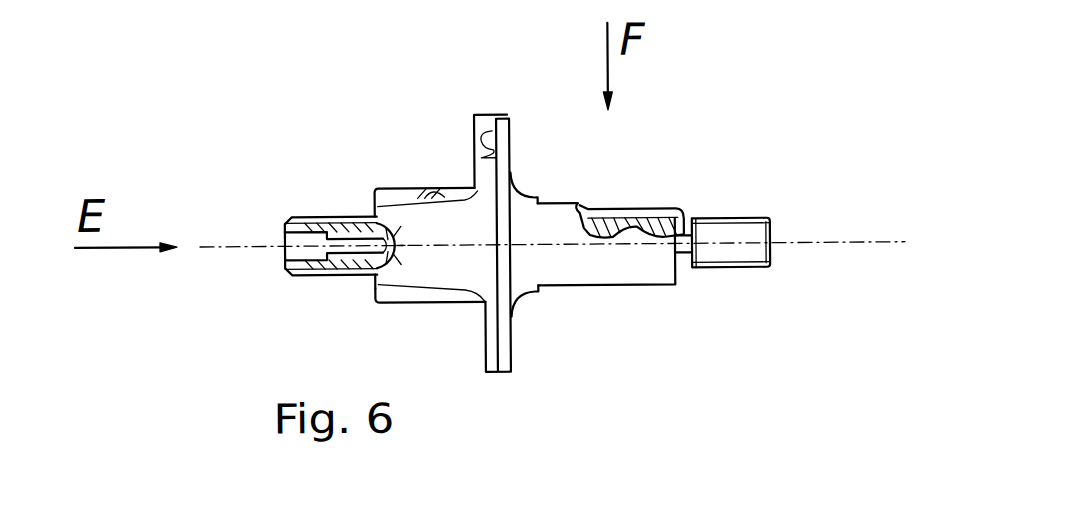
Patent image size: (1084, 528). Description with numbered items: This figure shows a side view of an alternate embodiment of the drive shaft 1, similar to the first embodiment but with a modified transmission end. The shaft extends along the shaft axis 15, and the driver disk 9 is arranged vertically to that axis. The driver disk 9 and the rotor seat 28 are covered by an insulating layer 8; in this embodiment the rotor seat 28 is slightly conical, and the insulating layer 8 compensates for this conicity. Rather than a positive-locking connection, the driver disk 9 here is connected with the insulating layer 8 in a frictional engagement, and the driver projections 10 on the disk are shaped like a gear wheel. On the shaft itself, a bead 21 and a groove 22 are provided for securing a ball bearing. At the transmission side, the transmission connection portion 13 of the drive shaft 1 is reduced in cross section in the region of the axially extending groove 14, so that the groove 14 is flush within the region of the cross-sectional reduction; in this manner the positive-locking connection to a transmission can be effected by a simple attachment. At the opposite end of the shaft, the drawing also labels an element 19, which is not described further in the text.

The drive shaft 1 is at (638, 384).
The insulating layer 8 is at (408, 190).
The driver disk 9 is at (511, 347).
The driver projections 10 is at (473, 127).
The transmission connection portion 13 is at (673, 297).
The groove 14 is at (627, 218).
The shaft axis 15 is at (848, 248).
The tip 19 is at (282, 241).
The bead 21 is at (540, 296).
The groove 22 is at (583, 290).
The rotor seat 28 is at (405, 306).